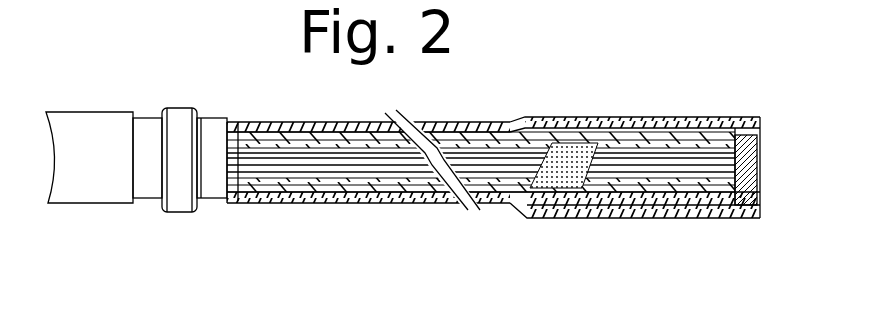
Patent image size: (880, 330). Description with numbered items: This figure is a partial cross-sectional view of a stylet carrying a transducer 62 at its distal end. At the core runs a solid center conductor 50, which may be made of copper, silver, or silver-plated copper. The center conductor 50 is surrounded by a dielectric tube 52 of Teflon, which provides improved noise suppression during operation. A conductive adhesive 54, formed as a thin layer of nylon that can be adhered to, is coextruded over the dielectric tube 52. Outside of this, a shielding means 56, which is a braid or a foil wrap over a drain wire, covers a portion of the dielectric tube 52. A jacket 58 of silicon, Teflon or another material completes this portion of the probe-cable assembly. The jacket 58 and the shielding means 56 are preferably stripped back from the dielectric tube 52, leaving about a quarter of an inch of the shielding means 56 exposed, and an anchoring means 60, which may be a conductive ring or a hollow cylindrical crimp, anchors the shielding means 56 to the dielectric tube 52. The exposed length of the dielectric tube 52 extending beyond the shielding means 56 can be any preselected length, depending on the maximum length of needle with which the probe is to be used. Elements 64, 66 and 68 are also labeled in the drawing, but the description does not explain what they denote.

The center conductor 50 is at (258, 150).
The dielectric tube 52 is at (327, 177).
The conductive adhesive 54 is at (347, 124).
The shielding means 56 is at (213, 177).
The jacket 58 is at (100, 187).
The anchoring means 60 is at (178, 143).
The transducer 62 is at (771, 146).
The marker band 64 is at (560, 187).
The outer jacket 66 is at (705, 125).
The outer sheath bottom 68 is at (695, 218).